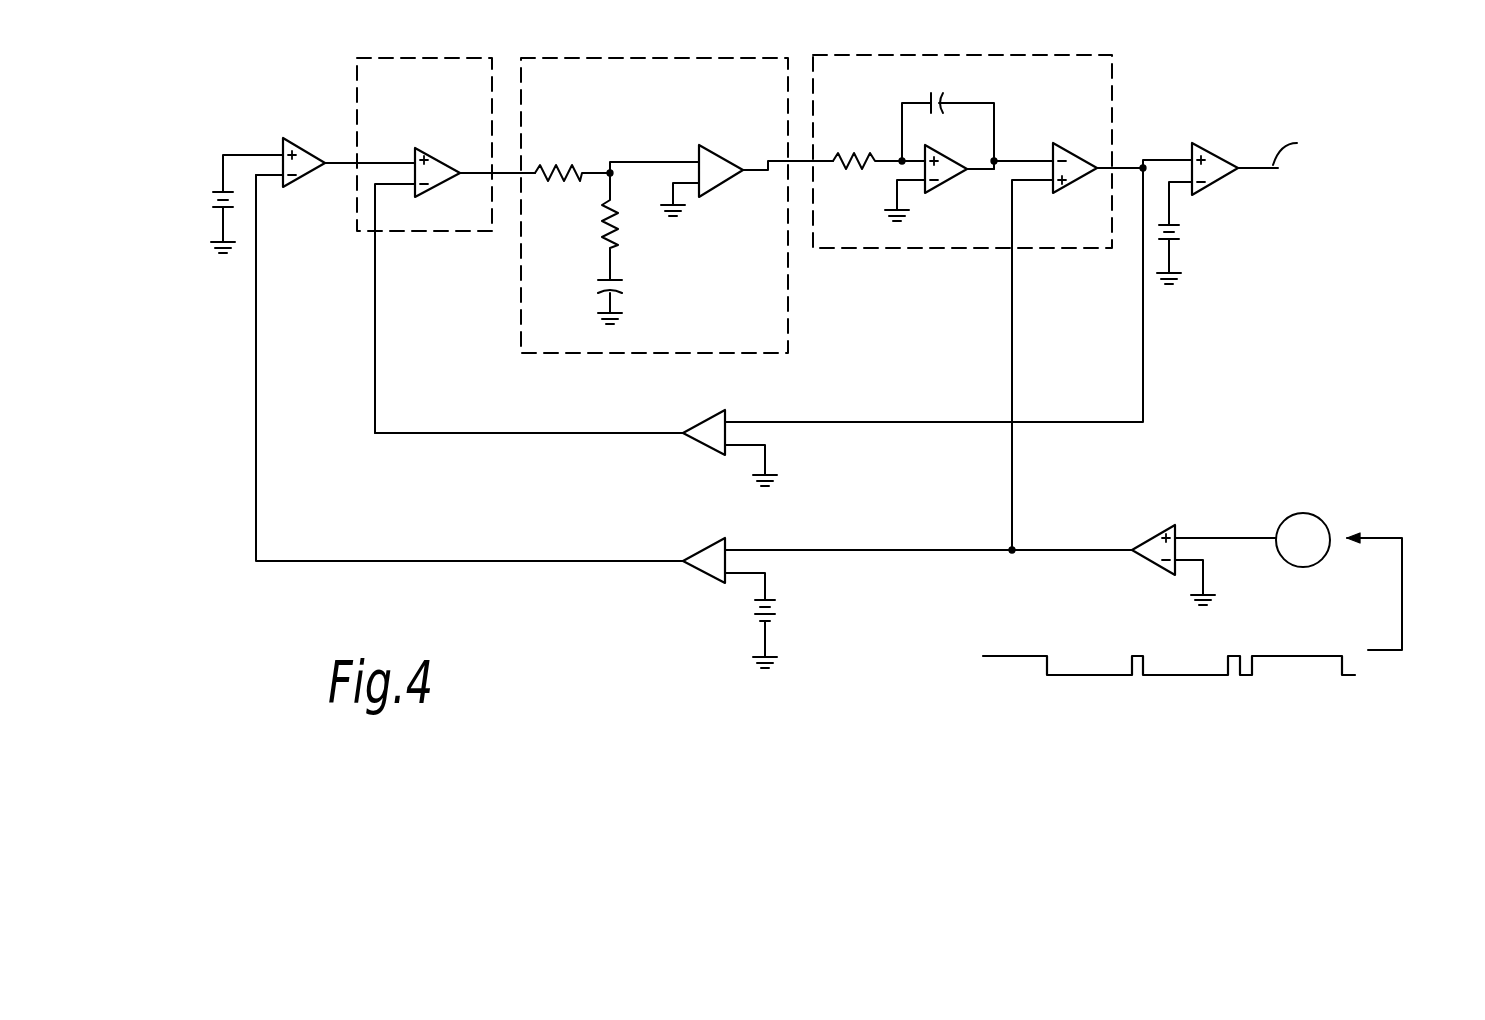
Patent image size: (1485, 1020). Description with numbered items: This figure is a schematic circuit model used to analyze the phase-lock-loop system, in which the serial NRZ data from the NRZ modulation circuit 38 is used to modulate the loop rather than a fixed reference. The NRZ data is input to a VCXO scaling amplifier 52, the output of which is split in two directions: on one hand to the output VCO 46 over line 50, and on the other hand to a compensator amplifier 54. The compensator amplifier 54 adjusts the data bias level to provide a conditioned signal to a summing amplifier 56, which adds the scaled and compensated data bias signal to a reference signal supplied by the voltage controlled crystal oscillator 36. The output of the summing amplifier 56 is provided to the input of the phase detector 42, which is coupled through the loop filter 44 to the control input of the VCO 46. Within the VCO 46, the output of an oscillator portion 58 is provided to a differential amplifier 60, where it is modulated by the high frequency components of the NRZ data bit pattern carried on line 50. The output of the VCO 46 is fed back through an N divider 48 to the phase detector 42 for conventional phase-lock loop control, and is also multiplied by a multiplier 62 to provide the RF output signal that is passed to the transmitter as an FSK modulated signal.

The voltage controlled crystal oscillator 36 is at (157, 158).
The summing amplifier 56 is at (305, 183).
The phase detector 42 is at (452, 58).
The loop filter 44 is at (625, 58).
The output VCO 46 is at (860, 55).
The oscillator portion 58 is at (1000, 103).
The differential amplifier 60 is at (1087, 157).
The multiplier 62 is at (1280, 128).
The N divider 48 is at (727, 412).
The line 50 is at (1012, 376).
The compensator amplifier 54 is at (727, 545).
The VCXO scaling amplifier 52 is at (1132, 538).
The NRZ modulation circuit 38 is at (1402, 592).